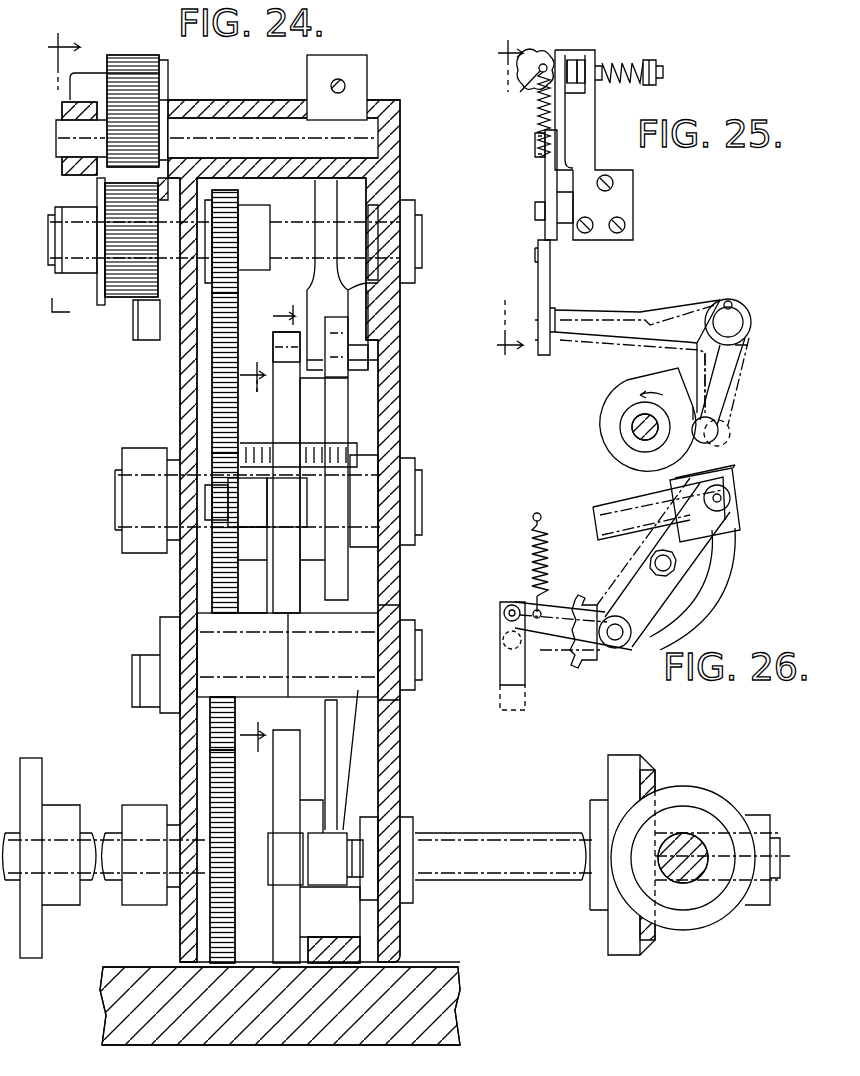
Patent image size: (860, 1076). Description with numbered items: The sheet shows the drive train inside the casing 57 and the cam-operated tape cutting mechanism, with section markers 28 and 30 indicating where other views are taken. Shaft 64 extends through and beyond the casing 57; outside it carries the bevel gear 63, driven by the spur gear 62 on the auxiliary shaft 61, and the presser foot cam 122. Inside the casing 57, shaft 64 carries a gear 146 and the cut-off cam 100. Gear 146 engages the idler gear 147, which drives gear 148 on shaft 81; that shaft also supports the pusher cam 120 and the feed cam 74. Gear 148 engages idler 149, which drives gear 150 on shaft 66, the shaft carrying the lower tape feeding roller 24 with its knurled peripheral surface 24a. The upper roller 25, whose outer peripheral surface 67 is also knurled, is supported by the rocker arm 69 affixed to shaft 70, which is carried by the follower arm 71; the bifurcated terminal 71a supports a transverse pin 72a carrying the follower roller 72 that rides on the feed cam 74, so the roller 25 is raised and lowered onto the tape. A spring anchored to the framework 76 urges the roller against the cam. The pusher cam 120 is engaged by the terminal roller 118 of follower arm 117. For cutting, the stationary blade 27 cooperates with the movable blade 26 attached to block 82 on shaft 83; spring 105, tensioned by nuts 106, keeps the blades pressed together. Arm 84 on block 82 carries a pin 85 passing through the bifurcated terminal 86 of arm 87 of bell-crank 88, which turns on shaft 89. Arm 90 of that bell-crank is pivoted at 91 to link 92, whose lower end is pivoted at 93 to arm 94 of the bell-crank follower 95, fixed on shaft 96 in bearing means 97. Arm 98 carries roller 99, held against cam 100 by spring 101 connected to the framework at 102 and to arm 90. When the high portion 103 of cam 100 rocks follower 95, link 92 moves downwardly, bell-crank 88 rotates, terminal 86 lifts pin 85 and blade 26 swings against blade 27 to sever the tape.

In FIG. 24, the tape feeding roller 24 is at (113, 257).
In FIG. 24, the knurled peripheral surface 24a is at (126, 298).
In FIG. 24, the upper roller 25 is at (163, 59).
In FIG. 25, the cutting blade 26 is at (567, 60).
In FIG. 26, the cutting blade 26 is at (612, 517).
In FIG. 25, the cutting blade 27 is at (583, 60).
In FIG. 26, the cutting blade 27 is at (620, 503).
In FIG. 24, the section line 28 is at (177, 174).
In FIG. 24, the section line 30 is at (260, 551).
In FIG. 24, the casing 57 is at (396, 762).
In FIG. 24, the auxiliary shaft 61 is at (698, 870).
In FIG. 24, the spur gear 62 is at (710, 918).
In FIG. 24, the bevel gear 63 is at (607, 945).
In FIG. 24, the shaft 64 is at (112, 820).
In FIG. 25, the shaft 64 is at (635, 432).
In FIG. 24, the shaft 66 is at (50, 236).
In FIG. 24, the outer peripheral surface 67 is at (133, 62).
In FIG. 24, the rocker arm 69 is at (68, 85).
In FIG. 24, the shaft 70 is at (272, 149).
In FIG. 24, the follower arm 71 is at (362, 85).
In FIG. 24, the bifurcated terminal 71a is at (360, 365).
In FIG. 24, the follower roller 72 is at (342, 372).
In FIG. 24, the transverse pin 72a is at (370, 349).
In FIG. 24, the feed cam 74 is at (352, 410).
In FIG. 25, the framework 76 is at (540, 52).
In FIG. 24, the shaft 81 is at (422, 508).
In FIG. 26, the block 82 is at (722, 477).
In FIG. 26, the shaft 83 is at (722, 498).
In FIG. 25, the arm 84 is at (565, 118).
In FIG. 26, the arm 84 is at (718, 540).
In FIG. 25, the pin 85 is at (540, 157).
In FIG. 26, the pin 85 is at (678, 562).
In FIG. 26, the bifurcated terminal 86 is at (671, 568).
In FIG. 25, the arm 87 is at (545, 183).
In FIG. 26, the arm 87 is at (700, 600).
In FIG. 26, the bell-crank 88 is at (560, 648).
In FIG. 25, the shaft 89 is at (535, 211).
In FIG. 26, the shaft 89 is at (622, 645).
In FIG. 26, the arm 90 is at (562, 612).
In FIG. 26, the pivotal connection 91 is at (504, 613).
In FIG. 25, the link 92 is at (540, 282).
In FIG. 26, the link 92 is at (502, 665).
In FIG. 25, the pivotal connection 93 is at (550, 310).
In FIG. 25, the arm 94 is at (605, 315).
In FIG. 24, the bell-crank follower 95 is at (345, 797).
In FIG. 25, the bell-crank follower 95 is at (684, 300).
In FIG. 24, the shaft 96 is at (422, 650).
In FIG. 25, the shaft 96 is at (735, 315).
In FIG. 24, the bearing means 97 is at (403, 618).
In FIG. 25, the bearing means 97 is at (751, 322).
In FIG. 25, the arm 98 is at (733, 370).
In FIG. 24, the roller 99 is at (315, 859).
In FIG. 25, the roller 99 is at (718, 430).
In FIG. 24, the cut-off cam 100 is at (293, 908).
In FIG. 25, the cut-off cam 100 is at (615, 413).
In FIG. 25, the spring 101 is at (538, 108).
In FIG. 26, the spring 101 is at (532, 563).
In FIG. 25, the framework connection 102 is at (520, 88).
In FIG. 26, the framework connection 102 is at (535, 513).
In FIG. 25, the high portion 103 is at (680, 372).
In FIG. 25, the spring 105 is at (620, 66).
In FIG. 25, the nuts 106 is at (658, 66).
In FIG. 24, the follower arm 117 is at (256, 622).
In FIG. 24, the terminal roller 118 is at (258, 545).
In FIG. 24, the pusher cam 120 is at (278, 433).
In FIG. 24, the presser foot cam 122 is at (36, 760).
In FIG. 24, the gear 146 is at (232, 890).
In FIG. 24, the idler gear 147 is at (210, 712).
In FIG. 24, the gear 148 is at (215, 572).
In FIG. 24, the idler 149 is at (215, 380).
In FIG. 24, the gear 150 is at (232, 200).